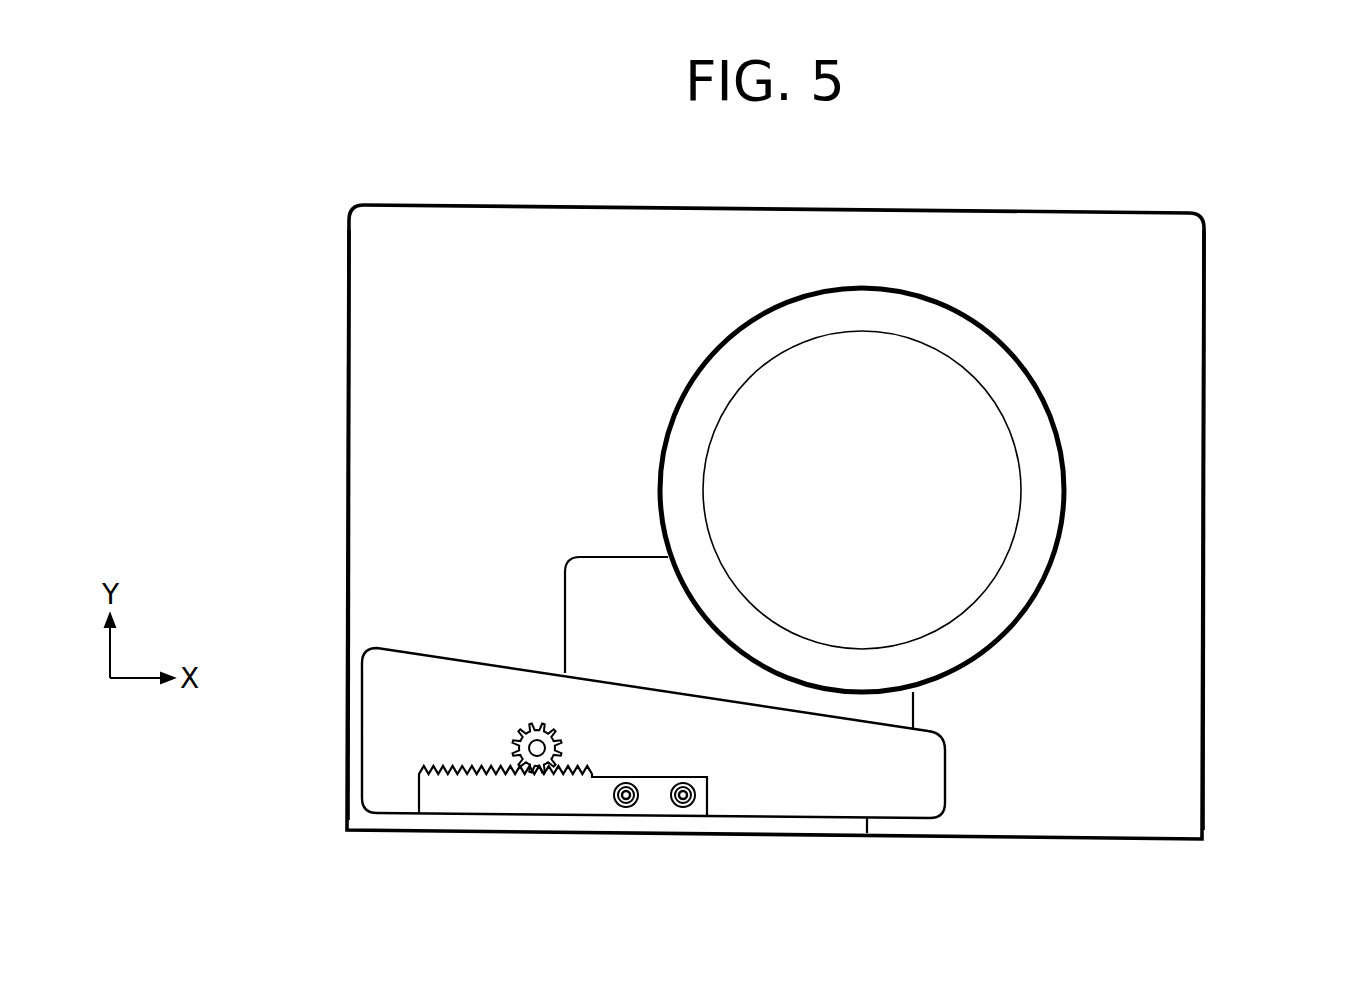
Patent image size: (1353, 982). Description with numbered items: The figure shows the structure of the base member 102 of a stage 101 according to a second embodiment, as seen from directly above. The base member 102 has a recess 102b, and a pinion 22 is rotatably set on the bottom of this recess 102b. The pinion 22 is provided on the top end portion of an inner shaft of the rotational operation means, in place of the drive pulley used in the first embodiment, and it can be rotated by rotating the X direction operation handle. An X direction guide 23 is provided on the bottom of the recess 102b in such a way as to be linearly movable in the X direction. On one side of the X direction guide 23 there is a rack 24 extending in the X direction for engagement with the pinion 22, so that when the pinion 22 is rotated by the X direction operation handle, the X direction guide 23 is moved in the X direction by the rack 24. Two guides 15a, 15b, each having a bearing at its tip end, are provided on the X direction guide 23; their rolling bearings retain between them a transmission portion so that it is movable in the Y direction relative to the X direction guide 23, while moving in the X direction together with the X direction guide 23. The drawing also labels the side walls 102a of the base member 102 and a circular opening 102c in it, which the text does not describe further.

The stage 101 is at (697, 488).
The base member 102 is at (369, 402).
The side wall of camera body 102a is at (347, 522).
The recess 102b is at (827, 803).
The lens opening 102c is at (1000, 490).
The guide 15a is at (632, 806).
The guide 15b is at (690, 806).
The pinion 22 is at (548, 753).
The X direction guide 23 is at (467, 803).
The rack 24 is at (486, 808).